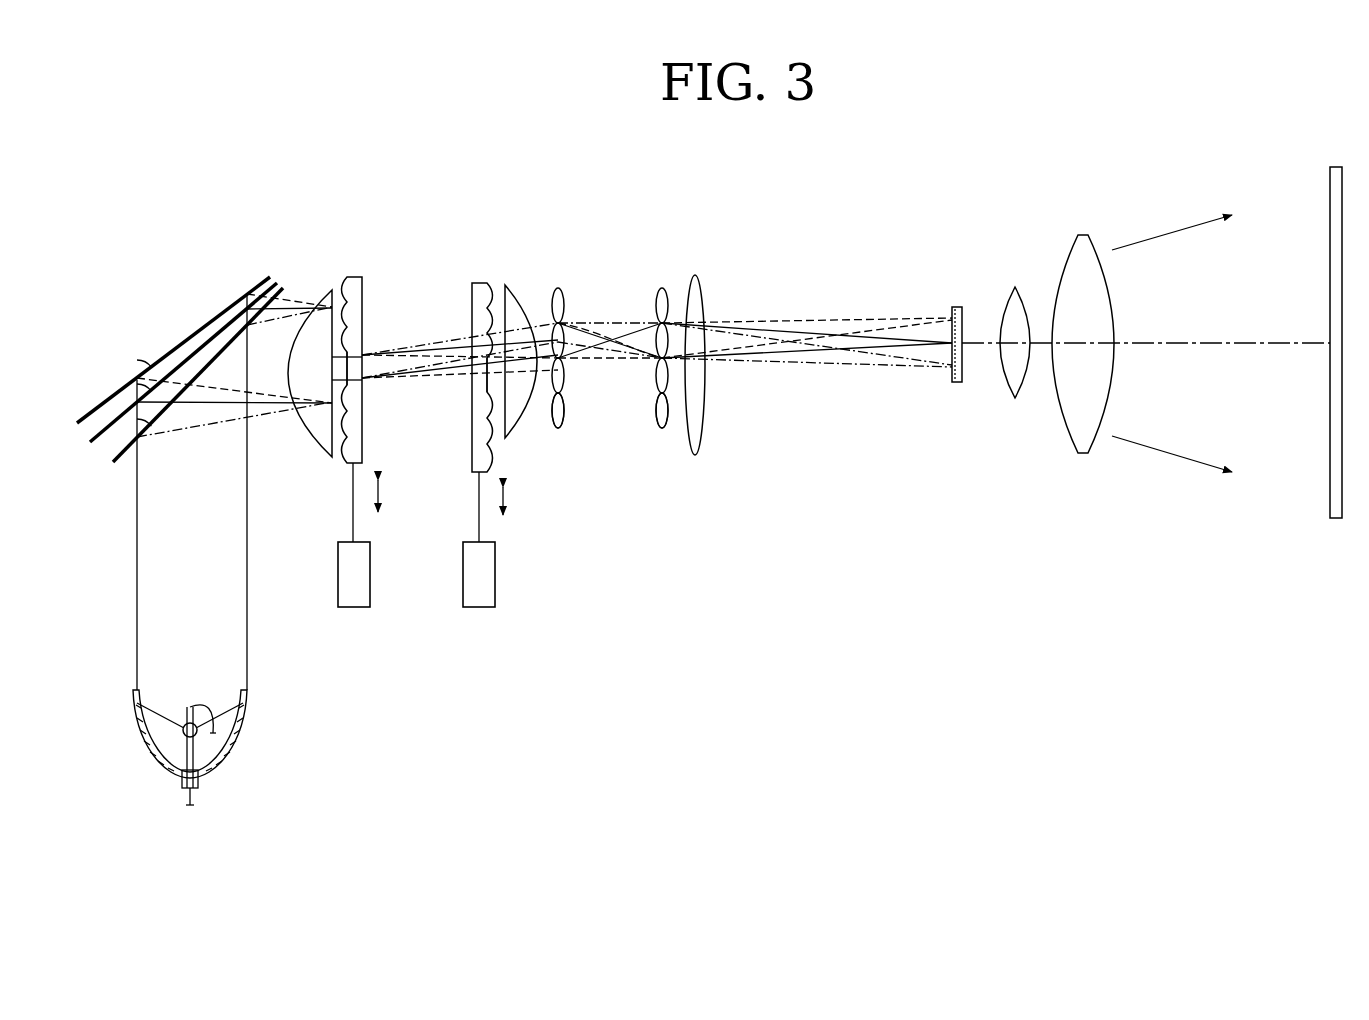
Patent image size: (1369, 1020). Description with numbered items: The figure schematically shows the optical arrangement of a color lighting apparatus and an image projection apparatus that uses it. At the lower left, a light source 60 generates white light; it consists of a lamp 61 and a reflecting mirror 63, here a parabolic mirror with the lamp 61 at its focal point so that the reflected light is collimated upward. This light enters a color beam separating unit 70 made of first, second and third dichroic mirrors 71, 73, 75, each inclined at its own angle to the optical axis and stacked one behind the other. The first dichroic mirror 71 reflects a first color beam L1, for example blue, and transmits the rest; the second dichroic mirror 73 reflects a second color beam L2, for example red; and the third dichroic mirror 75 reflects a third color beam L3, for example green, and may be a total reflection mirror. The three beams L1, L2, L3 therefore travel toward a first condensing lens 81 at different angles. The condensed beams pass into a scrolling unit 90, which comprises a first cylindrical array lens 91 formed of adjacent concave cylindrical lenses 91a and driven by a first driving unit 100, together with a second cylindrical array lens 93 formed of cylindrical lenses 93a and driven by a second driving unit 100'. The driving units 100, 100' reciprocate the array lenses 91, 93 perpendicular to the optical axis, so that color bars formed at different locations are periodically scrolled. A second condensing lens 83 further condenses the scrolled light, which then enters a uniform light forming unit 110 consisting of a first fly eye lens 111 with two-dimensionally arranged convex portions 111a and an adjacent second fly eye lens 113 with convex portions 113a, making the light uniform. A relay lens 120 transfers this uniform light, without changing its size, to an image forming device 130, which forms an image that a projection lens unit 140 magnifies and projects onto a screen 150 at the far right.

The light source 60 is at (132, 753).
The lamp 61 is at (185, 733).
The reflecting mirror 63 is at (233, 747).
The color beam separating unit 70 is at (138, 345).
The first dichroic mirror 71 is at (125, 460).
The second dichroic mirror 73 is at (102, 447).
The third dichroic mirror 75 is at (95, 410).
The first condensing lens 81 is at (332, 290).
The second condensing lens 83 is at (505, 285).
The scrolling unit 90 is at (413, 232).
The first cylindrical array lens 91 is at (360, 277).
The cylindrical lenses 91a is at (347, 447).
The second cylindrical array lens 93 is at (475, 283).
The cylindrical lenses 93a is at (487, 455).
The first driving unit 100 is at (354, 582).
The second driving unit 100' is at (480, 587).
The uniform light forming unit 110 is at (640, 208).
The first fly eye lens 111 is at (560, 287).
The convex portions 111a is at (562, 413).
The second fly eye lens 113 is at (660, 287).
The convex portions 113a is at (657, 423).
The relay lens 120 is at (695, 275).
The image forming device 130 is at (953, 307).
The projection lens unit 140 is at (1088, 225).
The screen 150 is at (1330, 180).
The first color beam L1 is at (228, 428).
The second color beam L2 is at (240, 400).
The third color beam L3 is at (203, 387).